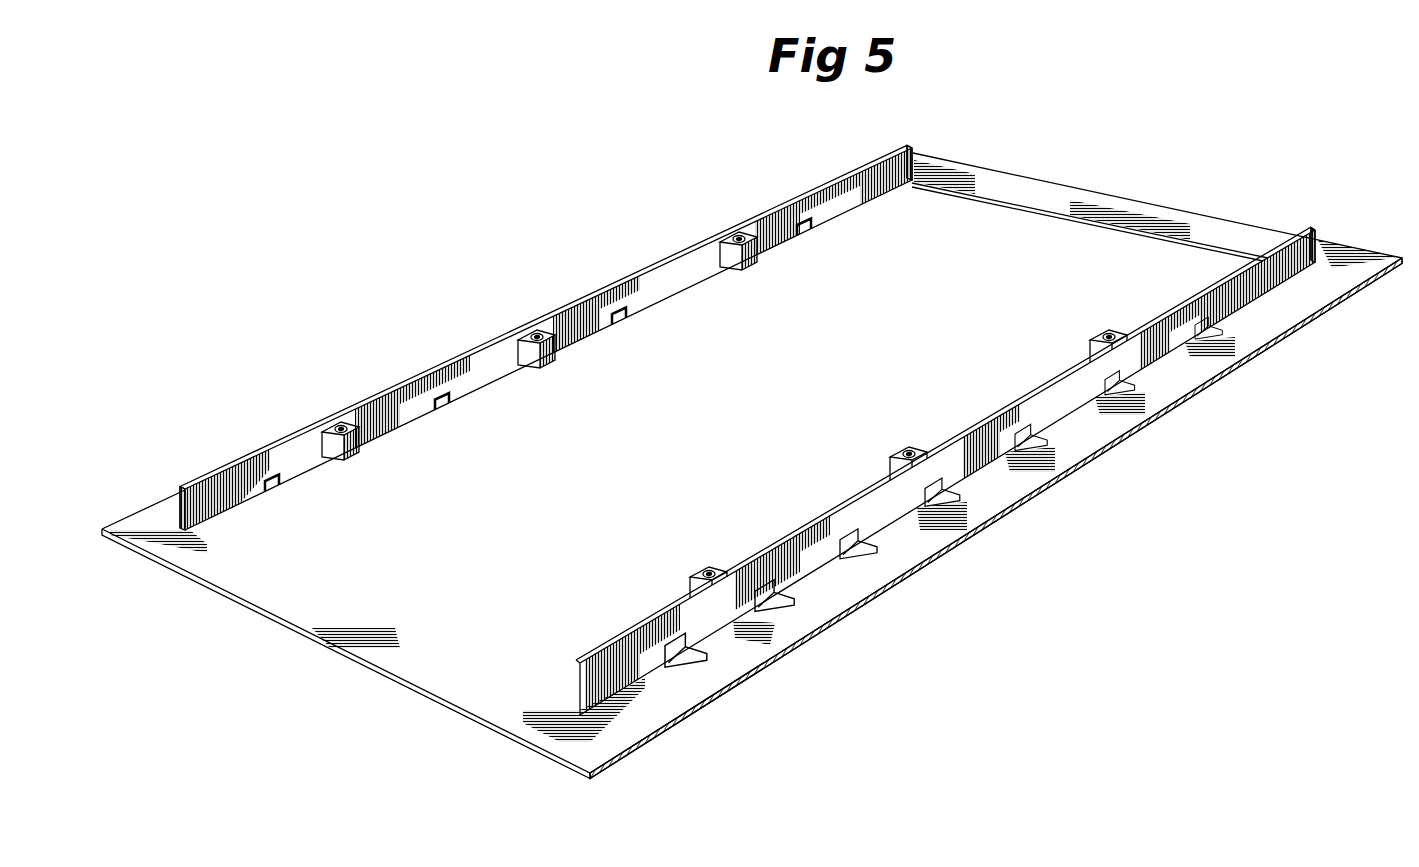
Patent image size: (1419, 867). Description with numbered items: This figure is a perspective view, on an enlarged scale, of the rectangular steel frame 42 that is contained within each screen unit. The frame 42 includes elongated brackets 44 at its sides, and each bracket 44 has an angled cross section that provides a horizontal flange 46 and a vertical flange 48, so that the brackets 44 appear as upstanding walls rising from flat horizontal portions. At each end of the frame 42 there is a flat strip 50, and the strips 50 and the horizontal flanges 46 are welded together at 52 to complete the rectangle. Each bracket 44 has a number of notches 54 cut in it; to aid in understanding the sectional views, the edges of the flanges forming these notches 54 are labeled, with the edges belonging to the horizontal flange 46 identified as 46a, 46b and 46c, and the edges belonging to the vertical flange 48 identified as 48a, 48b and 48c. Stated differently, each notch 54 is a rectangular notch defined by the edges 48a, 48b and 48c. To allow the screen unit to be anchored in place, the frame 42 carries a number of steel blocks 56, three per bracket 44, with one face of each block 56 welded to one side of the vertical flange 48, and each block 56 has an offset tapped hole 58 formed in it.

The rectangular steel frame 42 is at (265, 660).
The elongated bracket 44 is at (620, 266).
The horizontal flange 46 is at (1272, 322).
The edge of horizontal flange 46a is at (885, 566).
The edge of horizontal flange 46b is at (1035, 448).
The edge of horizontal flange 46c is at (1165, 380).
The vertical flange 48 is at (1268, 248).
The edge of vertical flange 48a is at (628, 335).
The edge of vertical flange 48b is at (632, 317).
The edge of vertical flange 48c is at (1115, 385).
The flat strip 50 is at (1040, 188).
The weld 52 is at (165, 505).
The notch 54 is at (803, 237).
The steel block 56 is at (748, 270).
The offset tapped hole 58 is at (738, 236).